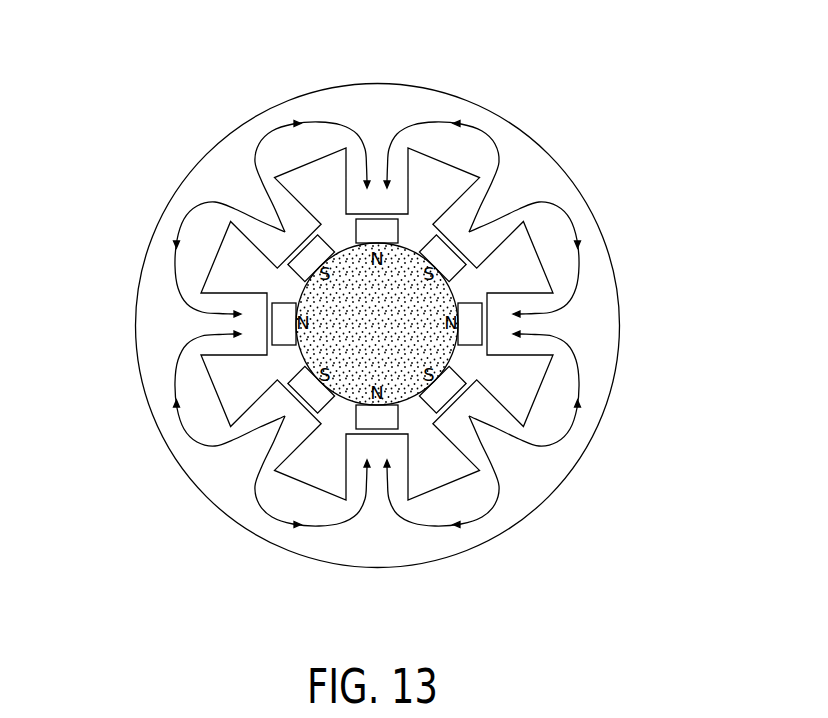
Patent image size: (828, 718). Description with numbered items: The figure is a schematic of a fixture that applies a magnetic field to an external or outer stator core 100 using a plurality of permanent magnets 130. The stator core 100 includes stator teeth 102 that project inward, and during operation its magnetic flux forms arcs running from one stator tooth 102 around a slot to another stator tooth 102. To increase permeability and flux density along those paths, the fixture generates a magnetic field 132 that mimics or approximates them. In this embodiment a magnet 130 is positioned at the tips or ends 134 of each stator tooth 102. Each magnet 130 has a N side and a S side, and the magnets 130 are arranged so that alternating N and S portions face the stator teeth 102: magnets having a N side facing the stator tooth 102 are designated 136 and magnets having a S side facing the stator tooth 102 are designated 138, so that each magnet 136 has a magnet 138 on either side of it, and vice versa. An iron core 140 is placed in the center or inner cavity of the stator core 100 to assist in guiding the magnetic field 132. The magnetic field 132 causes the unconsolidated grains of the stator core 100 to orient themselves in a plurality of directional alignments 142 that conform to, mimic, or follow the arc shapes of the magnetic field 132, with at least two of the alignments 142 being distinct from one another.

The stator core 100 is at (573, 178).
The stator teeth 102 is at (285, 215).
The magnets 130 is at (423, 247).
The magnetic field 132 is at (257, 162).
The tips or ends of stator teeth 134 is at (475, 400).
The magnets having a N side facing the stator tooth 136 is at (278, 268).
The magnets having a S side facing the stator tooth 138 is at (527, 330).
The iron core 140 is at (365, 435).
The directional alignments 142 is at (313, 127).